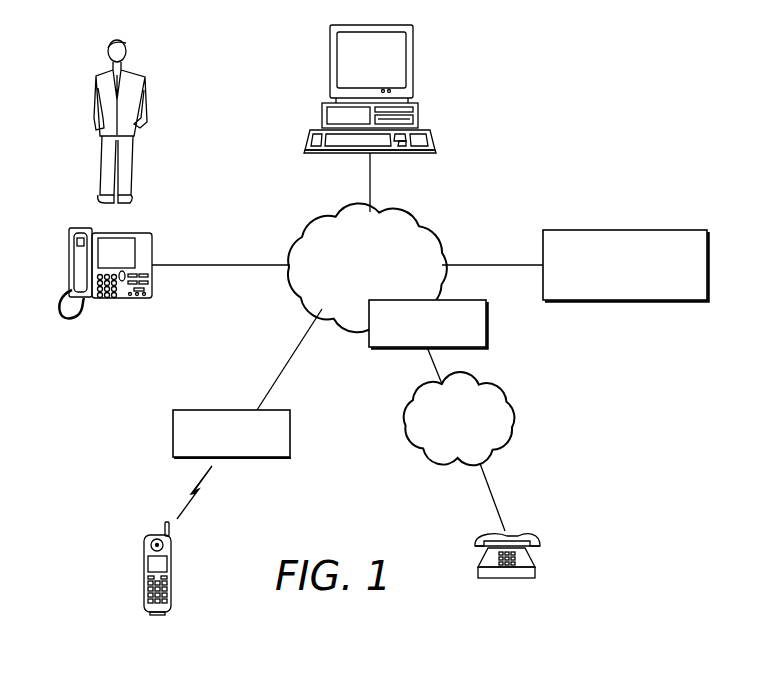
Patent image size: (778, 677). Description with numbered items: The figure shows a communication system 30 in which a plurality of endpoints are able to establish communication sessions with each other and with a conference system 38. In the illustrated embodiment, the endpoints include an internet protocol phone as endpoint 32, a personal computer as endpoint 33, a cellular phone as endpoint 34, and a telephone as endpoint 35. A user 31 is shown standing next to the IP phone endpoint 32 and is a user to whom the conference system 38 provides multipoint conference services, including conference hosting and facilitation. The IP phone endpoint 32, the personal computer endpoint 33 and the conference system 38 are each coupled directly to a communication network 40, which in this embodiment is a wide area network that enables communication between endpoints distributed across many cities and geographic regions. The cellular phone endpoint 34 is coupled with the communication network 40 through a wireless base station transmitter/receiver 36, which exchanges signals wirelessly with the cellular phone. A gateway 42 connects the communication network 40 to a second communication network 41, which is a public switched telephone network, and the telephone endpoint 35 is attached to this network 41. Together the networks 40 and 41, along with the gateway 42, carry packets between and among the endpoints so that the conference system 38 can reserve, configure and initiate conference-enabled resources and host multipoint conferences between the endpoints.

The communication system 30 is at (540, 148).
The user 31 is at (95, 90).
The endpoint 32 is at (69, 264).
The endpoint 33 is at (413, 60).
The endpoint 34 is at (143, 580).
The endpoint 35 is at (537, 572).
The wireless base station transmitter/receiver 36 is at (173, 432).
The conference system 38 is at (643, 230).
The communication network 40 is at (353, 282).
The communication network 41 is at (515, 428).
The gateway 42 is at (488, 340).